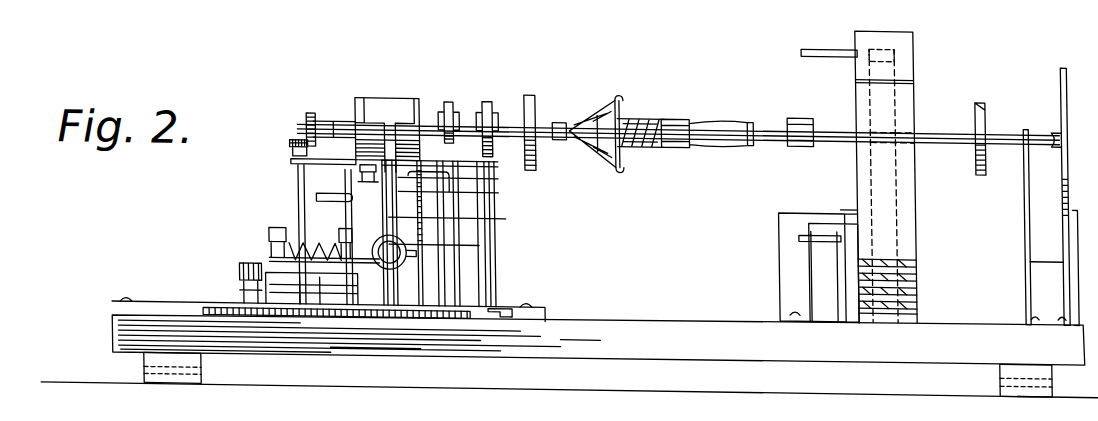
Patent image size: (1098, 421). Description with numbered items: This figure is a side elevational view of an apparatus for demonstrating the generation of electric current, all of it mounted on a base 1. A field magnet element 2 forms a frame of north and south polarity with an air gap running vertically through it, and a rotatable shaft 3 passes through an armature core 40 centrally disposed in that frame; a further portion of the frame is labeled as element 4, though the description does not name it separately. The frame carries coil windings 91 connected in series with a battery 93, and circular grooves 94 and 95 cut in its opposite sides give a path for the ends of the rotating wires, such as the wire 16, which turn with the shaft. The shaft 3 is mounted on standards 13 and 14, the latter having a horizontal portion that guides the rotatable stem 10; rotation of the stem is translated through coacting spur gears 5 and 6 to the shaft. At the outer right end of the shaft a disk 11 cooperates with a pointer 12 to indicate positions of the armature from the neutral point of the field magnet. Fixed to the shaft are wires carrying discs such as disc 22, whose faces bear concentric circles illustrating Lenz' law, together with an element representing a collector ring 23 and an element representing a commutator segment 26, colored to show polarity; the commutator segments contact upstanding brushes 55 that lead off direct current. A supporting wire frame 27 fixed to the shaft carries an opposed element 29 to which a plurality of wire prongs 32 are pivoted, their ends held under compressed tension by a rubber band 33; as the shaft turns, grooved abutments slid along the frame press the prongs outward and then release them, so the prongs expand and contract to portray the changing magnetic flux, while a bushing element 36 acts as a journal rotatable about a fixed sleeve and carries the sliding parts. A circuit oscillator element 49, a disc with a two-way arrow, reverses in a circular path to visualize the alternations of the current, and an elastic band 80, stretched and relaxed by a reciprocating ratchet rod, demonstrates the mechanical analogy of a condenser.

The base 1 is at (1070, 335).
The field magnet element 2 is at (910, 34).
The rotatable shaft 3 is at (519, 133).
The column web 4 is at (912, 85).
The spur gear 5 is at (312, 113).
The spur gear 6 is at (294, 139).
The stem 10 is at (300, 200).
The disk 11 is at (1066, 68).
The pointer 12 is at (1066, 250).
The standard 13 is at (1027, 209).
The standard 14 is at (300, 166).
The wire 16 is at (985, 92).
The disc 22 is at (539, 91).
The collector ring 23 is at (455, 101).
The commutator segment 26 is at (410, 95).
The supporting wire frame 27 is at (496, 96).
The opposed element 29 is at (566, 116).
The wire prongs 32 is at (614, 93).
The rubber band 33 is at (638, 111).
The bushing element 36 is at (693, 112).
The armature core 40 is at (862, 88).
The circuit oscillator element 49 is at (346, 197).
The upstanding brushes 55 is at (386, 116).
The elastic band 80 is at (482, 214).
The coil windings 91 is at (905, 290).
The battery 93 is at (826, 278).
The circular groove 94 is at (912, 51).
The circular groove 95 is at (862, 40).